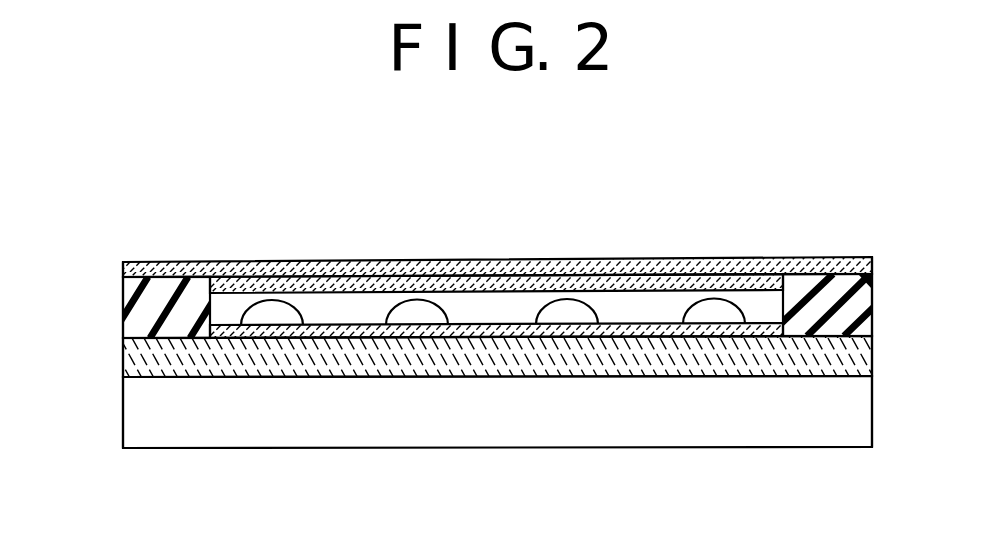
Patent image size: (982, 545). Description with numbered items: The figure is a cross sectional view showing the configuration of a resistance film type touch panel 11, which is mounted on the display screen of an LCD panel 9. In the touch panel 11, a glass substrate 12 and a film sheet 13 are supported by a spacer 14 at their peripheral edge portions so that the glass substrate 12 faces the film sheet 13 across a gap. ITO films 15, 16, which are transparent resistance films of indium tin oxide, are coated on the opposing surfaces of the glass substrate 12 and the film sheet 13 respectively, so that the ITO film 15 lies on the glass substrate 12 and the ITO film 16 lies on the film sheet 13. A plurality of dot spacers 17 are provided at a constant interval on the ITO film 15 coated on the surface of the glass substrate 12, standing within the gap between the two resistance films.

The LCD panel 9 is at (232, 432).
The resistance film type touch panel 11 is at (99, 308).
The glass substrate 12 is at (767, 366).
The film sheet 13 is at (748, 258).
The spacer 14 is at (850, 288).
The ITO film 15 is at (496, 332).
The ITO film 16 is at (247, 263).
The dot spacers 17 is at (553, 313).